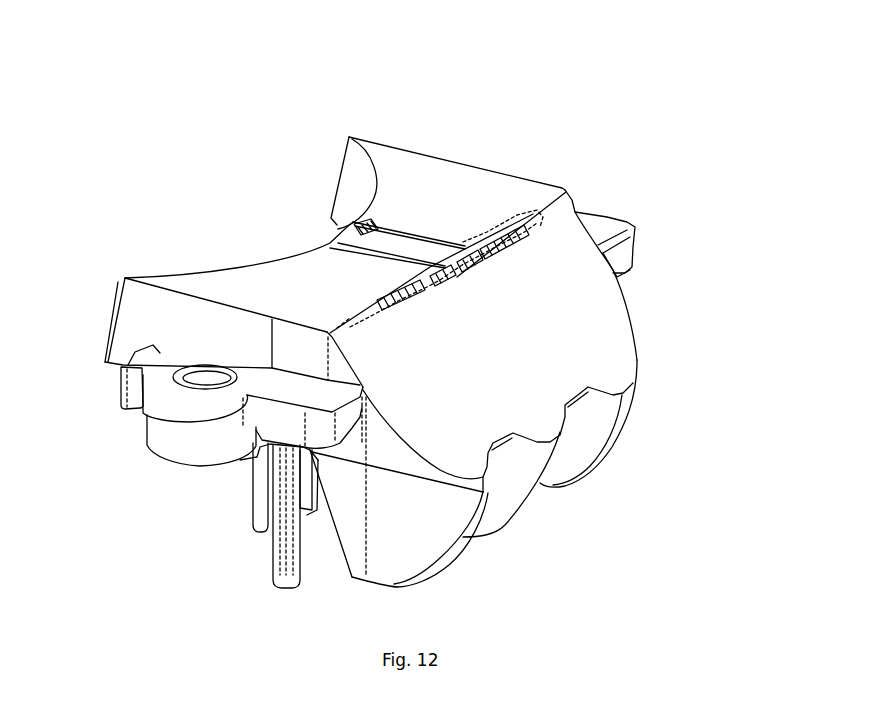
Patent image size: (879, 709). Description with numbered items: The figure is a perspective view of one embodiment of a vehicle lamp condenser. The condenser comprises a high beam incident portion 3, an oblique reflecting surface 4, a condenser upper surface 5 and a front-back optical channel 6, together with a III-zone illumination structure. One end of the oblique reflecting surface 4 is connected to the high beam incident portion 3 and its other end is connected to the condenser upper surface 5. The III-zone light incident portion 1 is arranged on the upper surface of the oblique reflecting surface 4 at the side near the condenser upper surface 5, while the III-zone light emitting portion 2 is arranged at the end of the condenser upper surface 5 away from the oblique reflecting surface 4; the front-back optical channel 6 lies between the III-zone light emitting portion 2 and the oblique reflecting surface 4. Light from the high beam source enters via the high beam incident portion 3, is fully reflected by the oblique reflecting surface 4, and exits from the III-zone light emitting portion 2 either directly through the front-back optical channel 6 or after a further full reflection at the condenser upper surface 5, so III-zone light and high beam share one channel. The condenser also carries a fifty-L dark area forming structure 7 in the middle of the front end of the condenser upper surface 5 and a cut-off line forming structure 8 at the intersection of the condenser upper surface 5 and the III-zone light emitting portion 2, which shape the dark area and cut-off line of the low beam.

The III-zone light incident portion 1 is at (457, 277).
The III-zone light emitting portion 2 is at (357, 192).
The high beam incident portion 3 is at (578, 455).
The oblique reflecting surface 4 is at (557, 267).
The condenser upper surface 5 is at (452, 184).
The front-back optical channel 6 is at (230, 330).
The 50 L dark area forming structure 7 is at (367, 219).
The cut-off line forming structure 8 is at (300, 252).